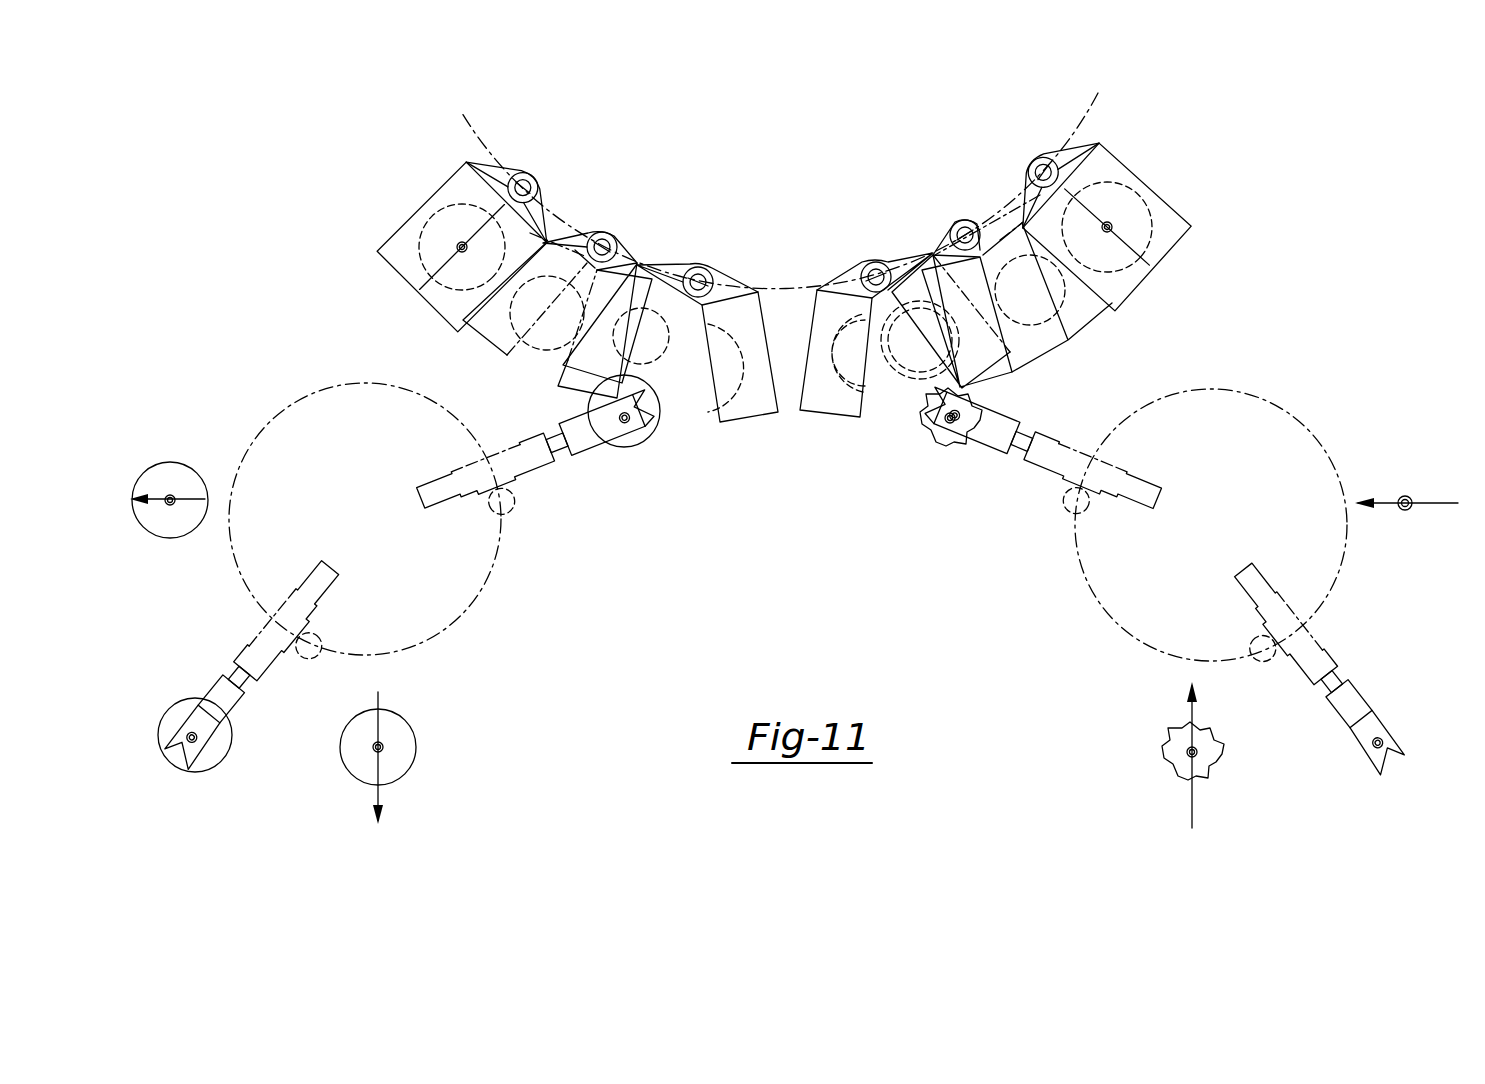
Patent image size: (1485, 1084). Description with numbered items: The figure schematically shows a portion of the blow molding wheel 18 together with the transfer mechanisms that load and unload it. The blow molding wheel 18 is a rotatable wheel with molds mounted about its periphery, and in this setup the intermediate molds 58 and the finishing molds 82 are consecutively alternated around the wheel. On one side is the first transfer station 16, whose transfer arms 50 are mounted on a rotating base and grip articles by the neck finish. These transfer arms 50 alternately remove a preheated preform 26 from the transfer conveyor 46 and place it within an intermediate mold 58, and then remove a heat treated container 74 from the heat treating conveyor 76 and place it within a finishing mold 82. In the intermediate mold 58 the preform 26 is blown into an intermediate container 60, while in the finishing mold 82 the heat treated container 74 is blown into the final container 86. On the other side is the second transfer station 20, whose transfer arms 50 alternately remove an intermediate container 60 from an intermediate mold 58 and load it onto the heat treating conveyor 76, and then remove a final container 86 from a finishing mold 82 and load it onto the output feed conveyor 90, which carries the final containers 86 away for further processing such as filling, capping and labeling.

The first transfer station 16 is at (1240, 450).
The blow molding wheel 18 is at (782, 144).
The second transfer station 20 is at (424, 574).
The preform 26 is at (1408, 497).
The transfer conveyor 46 is at (1382, 498).
The transfer arm 50 is at (523, 456).
The intermediate mold 58 is at (398, 248).
The intermediate container 60 is at (628, 440).
The heat treated container 74 is at (937, 442).
The heat treating conveyor 76 is at (380, 795).
The finishing mold 82 is at (835, 402).
The final container 86 is at (182, 472).
The output feed conveyor 90 is at (192, 502).